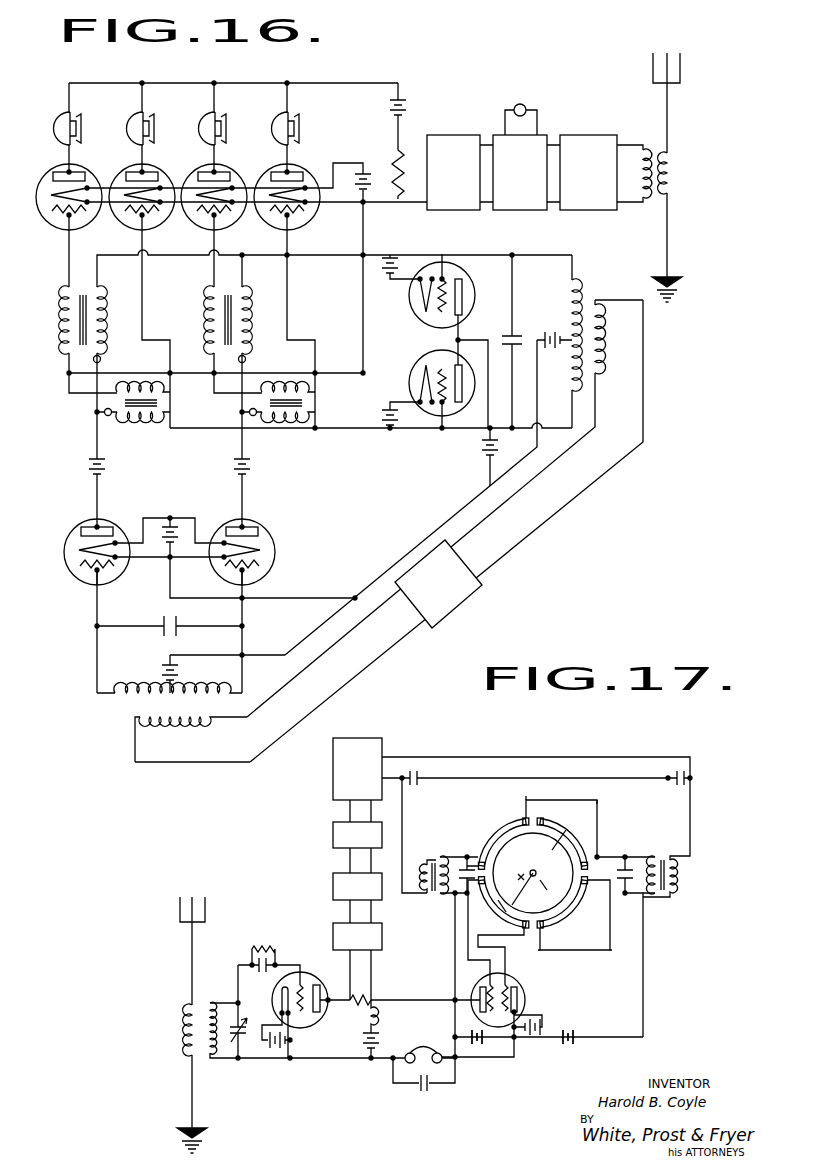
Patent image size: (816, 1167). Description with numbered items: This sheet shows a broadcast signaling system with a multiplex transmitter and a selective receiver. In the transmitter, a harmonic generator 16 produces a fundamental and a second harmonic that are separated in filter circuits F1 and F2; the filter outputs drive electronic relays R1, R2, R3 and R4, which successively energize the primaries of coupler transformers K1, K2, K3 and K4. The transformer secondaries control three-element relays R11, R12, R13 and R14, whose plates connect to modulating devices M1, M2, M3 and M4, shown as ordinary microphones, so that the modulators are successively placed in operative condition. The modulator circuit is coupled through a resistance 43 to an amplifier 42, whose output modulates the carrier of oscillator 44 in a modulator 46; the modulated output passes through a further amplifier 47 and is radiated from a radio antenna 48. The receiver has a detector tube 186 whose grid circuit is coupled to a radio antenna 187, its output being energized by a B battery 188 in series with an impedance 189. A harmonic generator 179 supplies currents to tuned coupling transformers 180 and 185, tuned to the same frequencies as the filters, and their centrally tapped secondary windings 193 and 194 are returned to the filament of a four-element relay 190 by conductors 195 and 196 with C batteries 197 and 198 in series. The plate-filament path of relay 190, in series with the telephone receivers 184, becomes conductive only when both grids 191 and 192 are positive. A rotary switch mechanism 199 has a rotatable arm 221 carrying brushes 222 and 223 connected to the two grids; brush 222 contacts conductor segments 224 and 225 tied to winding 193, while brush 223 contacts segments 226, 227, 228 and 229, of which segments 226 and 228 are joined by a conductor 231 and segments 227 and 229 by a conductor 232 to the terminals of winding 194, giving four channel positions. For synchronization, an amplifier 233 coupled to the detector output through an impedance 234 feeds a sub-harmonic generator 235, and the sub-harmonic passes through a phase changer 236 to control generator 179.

In FIG. 16, the modulating device M1 is at (147, 119).
In FIG. 16, the modulating device M2 is at (292, 119).
In FIG. 16, the modulating device M3 is at (73, 119).
In FIG. 16, the modulating device M4 is at (219, 119).
In FIG. 16, the relay R11 is at (142, 230).
In FIG. 16, the relay R12 is at (290, 230).
In FIG. 16, the relay R13 is at (61, 206).
In FIG. 16, the relay R14 is at (218, 230).
In FIG. 16, the coupler transformer K1 is at (128, 420).
In FIG. 16, the coupler transformer K2 is at (312, 405).
In FIG. 16, the coupler transformer K3 is at (62, 318).
In FIG. 16, the coupler transformer K4 is at (208, 318).
In FIG. 16, the relay R1 is at (68, 568).
In FIG. 16, the relay R2 is at (278, 561).
In FIG. 16, the relay R3 is at (410, 370).
In FIG. 16, the relay R4 is at (409, 318).
In FIG. 16, the filter circuit F1 is at (606, 345).
In FIG. 16, the filter circuit F2 is at (112, 712).
In FIG. 16, the harmonic generator 16 is at (456, 598).
In FIG. 16, the amplifier 42 is at (440, 138).
In FIG. 16, the resistance 43 is at (395, 153).
In FIG. 16, the oscillator 44 is at (515, 108).
In FIG. 16, the modulator 46 is at (550, 135).
In FIG. 16, the amplifier 47 is at (590, 137).
In FIG. 16, the radio antenna 48 is at (670, 118).
In FIG. 17, the harmonic generator 179 is at (333, 765).
In FIG. 17, the phase changer 236 is at (333, 835).
In FIG. 17, the sub-harmonic generator 235 is at (333, 885).
In FIG. 17, the amplifier 233 is at (333, 935).
In FIG. 17, the radio antenna 187 is at (192, 948).
In FIG. 17, the detector tube 186 is at (305, 976).
In FIG. 17, the impedance 234 is at (372, 998).
In FIG. 17, the impedance 189 is at (377, 1017).
In FIG. 17, the B battery 188 is at (378, 1035).
In FIG. 17, the telephone receivers 184 is at (435, 1082).
In FIG. 17, the tuned coupling transformer 180 is at (430, 896).
In FIG. 17, the secondary winding 193 is at (447, 852).
In FIG. 17, the secondary winding 194 is at (654, 858).
In FIG. 17, the tuned coupling transformer 185 is at (665, 898).
In FIG. 17, the conductor 195 is at (455, 940).
In FIG. 17, the conductor 196 is at (643, 948).
In FIG. 17, the switch mechanism 199 is at (565, 908).
In FIG. 17, the segment 227 is at (510, 830).
In FIG. 17, the segment 228 is at (560, 838).
In FIG. 17, the segment 229 is at (540, 931).
In FIG. 17, the segment 226 is at (512, 931).
In FIG. 17, the brush 223 is at (505, 919).
In FIG. 17, the conductor 232 is at (597, 822).
In FIG. 17, the conductor 231 is at (592, 950).
In FIG. 17, the conductor segment 225 is at (560, 848).
In FIG. 17, the conductor segment 224 is at (536, 880).
In FIG. 17, the rotatable arm 221 is at (530, 873).
In FIG. 17, the brush 222 is at (511, 905).
In FIG. 17, the relay 190 is at (525, 993).
In FIG. 17, the grid 191 is at (480, 985).
In FIG. 17, the grid 192 is at (512, 987).
In FIG. 17, the C battery 197 is at (477, 1040).
In FIG. 17, the C battery 198 is at (569, 1040).